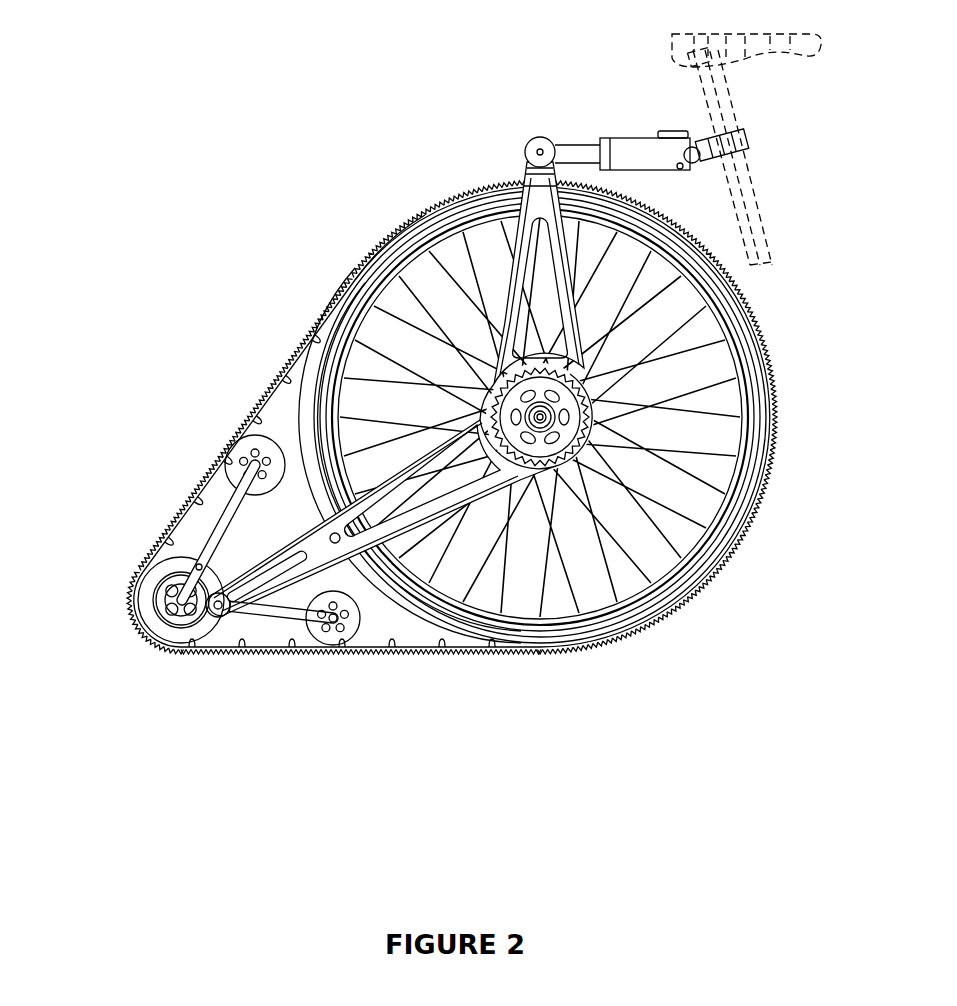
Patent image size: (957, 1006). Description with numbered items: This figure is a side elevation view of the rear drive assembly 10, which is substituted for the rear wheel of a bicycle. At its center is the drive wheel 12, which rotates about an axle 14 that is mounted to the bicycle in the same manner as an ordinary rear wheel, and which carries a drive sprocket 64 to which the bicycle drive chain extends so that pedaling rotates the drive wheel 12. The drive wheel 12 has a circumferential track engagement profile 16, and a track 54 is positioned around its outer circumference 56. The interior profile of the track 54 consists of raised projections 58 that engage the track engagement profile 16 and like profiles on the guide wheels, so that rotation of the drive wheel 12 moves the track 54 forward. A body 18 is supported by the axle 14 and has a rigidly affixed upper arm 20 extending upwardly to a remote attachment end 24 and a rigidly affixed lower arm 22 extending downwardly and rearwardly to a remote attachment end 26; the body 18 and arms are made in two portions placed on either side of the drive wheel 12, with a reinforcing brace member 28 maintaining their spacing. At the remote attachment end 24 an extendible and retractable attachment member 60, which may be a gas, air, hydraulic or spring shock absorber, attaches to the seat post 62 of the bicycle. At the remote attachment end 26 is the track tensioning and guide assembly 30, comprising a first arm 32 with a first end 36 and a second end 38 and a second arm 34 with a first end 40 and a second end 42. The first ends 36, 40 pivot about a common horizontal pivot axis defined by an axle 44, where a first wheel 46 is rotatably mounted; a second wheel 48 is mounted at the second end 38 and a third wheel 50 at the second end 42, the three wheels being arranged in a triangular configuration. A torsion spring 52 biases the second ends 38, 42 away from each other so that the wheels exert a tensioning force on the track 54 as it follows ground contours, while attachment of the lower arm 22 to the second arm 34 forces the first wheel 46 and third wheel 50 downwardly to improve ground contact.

The rear drive assembly 10 is at (355, 213).
The drive wheel 12 is at (722, 327).
The axle 14 is at (697, 537).
The track engagement profile 16 is at (537, 417).
The body 18 is at (345, 292).
The upper arm 20 is at (513, 227).
The lower arm 22 is at (328, 448).
The remote attachment end 24 is at (538, 148).
The remote attachment end 26 is at (227, 613).
The reinforcing brace member 28 is at (342, 543).
The track tensioning and guide assembly 30 is at (186, 552).
The first arm 32 is at (222, 522).
The second arm 34 is at (273, 614).
The first end 36 is at (148, 585).
The second end 38 is at (220, 460).
The first end 40 is at (190, 612).
The second end 42 is at (318, 622).
The axle 44 is at (173, 620).
The first wheel 46 is at (140, 590).
The second wheel 48 is at (227, 447).
The third wheel 50 is at (333, 650).
The torsion spring 52 is at (176, 608).
The track 54 is at (300, 350).
The outer circumference 56 is at (310, 398).
The raised projections 58 is at (432, 425).
The attachment member 60 is at (640, 162).
The seat post 62 is at (750, 175).
The drive sprocket 64 is at (693, 505).